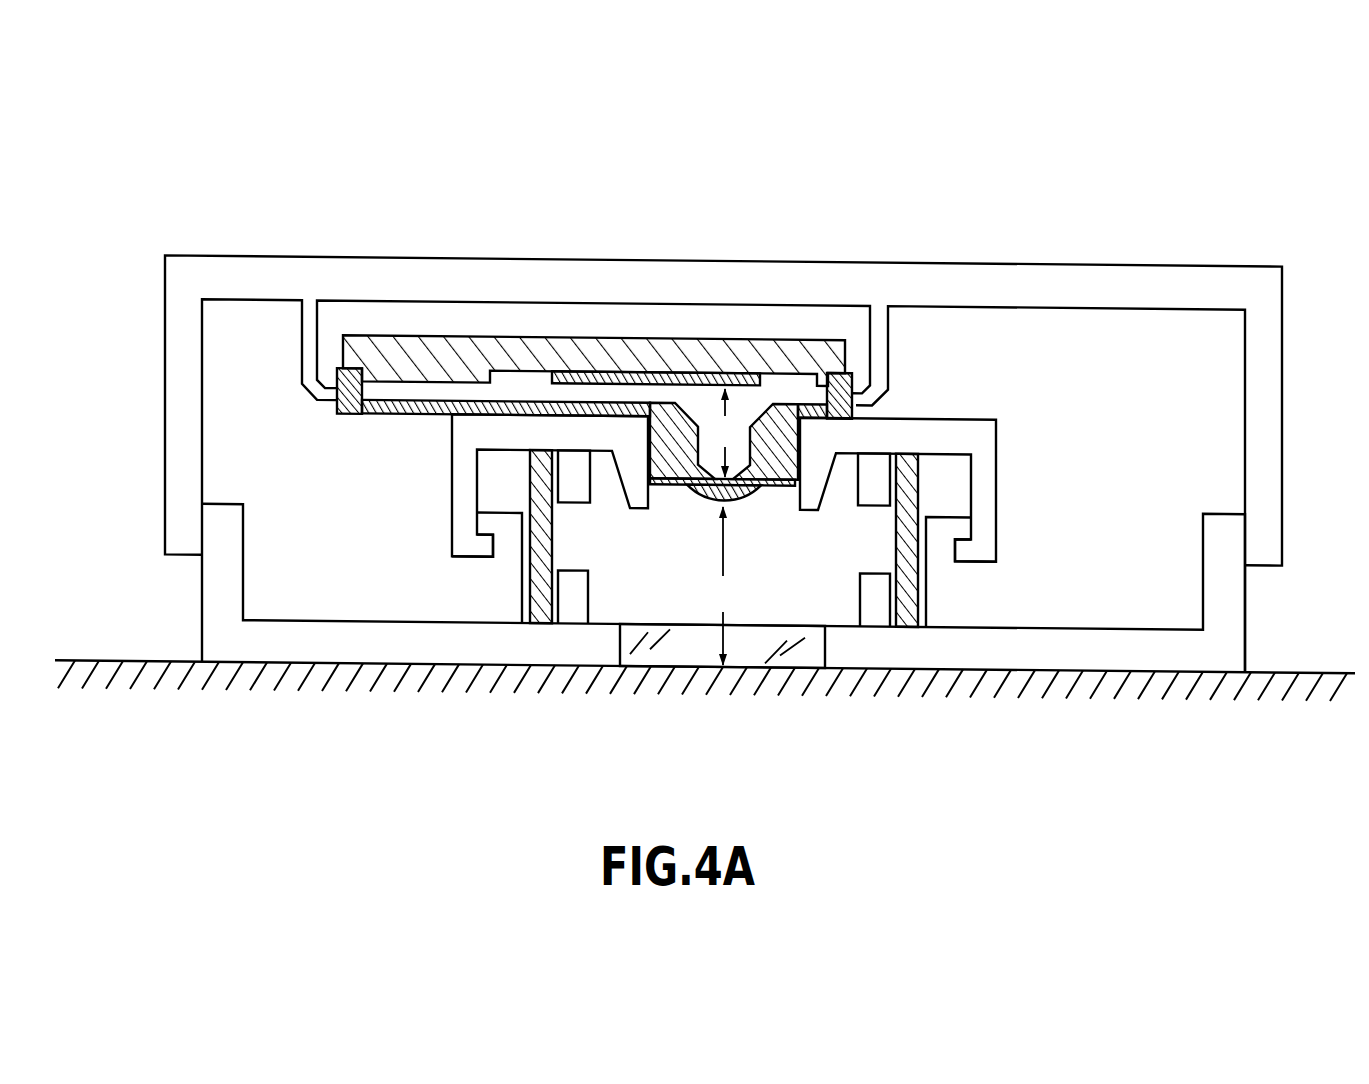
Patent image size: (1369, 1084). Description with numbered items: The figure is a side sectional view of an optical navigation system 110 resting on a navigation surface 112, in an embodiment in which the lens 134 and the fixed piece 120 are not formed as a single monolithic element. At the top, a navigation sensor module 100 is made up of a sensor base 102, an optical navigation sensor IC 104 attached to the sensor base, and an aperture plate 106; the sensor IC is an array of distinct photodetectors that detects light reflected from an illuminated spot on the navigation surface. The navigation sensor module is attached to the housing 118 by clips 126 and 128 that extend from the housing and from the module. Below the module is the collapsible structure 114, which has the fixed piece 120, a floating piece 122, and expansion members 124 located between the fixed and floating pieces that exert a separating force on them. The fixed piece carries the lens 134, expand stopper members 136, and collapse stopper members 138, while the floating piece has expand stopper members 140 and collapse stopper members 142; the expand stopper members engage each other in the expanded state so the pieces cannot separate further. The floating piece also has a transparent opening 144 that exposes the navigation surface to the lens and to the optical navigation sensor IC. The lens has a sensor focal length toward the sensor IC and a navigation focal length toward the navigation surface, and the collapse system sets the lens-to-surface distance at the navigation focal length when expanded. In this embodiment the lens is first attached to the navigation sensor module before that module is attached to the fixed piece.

The navigation sensor module 100 is at (594, 290).
The sensor base 102 is at (615, 339).
The optical navigation sensor IC 104 is at (515, 342).
The aperture plate 106 is at (347, 421).
The optical navigation system 110 is at (1190, 164).
The navigation surface 112 is at (140, 662).
The collapsible structure 114 is at (1044, 456).
The housing 118 is at (1285, 351).
The fixed piece 120 is at (452, 453).
The floating piece 122 is at (290, 624).
The expansion member 124 is at (553, 547).
The clip 126 is at (300, 375).
The clip 128 is at (322, 389).
The lens 134 is at (735, 505).
The expand stopper member 136 is at (483, 560).
The collapse stopper member 138 is at (573, 507).
The expand stopper member 140 is at (483, 527).
The collapse stopper member 142 is at (573, 569).
The transparent opening 144 is at (670, 656).